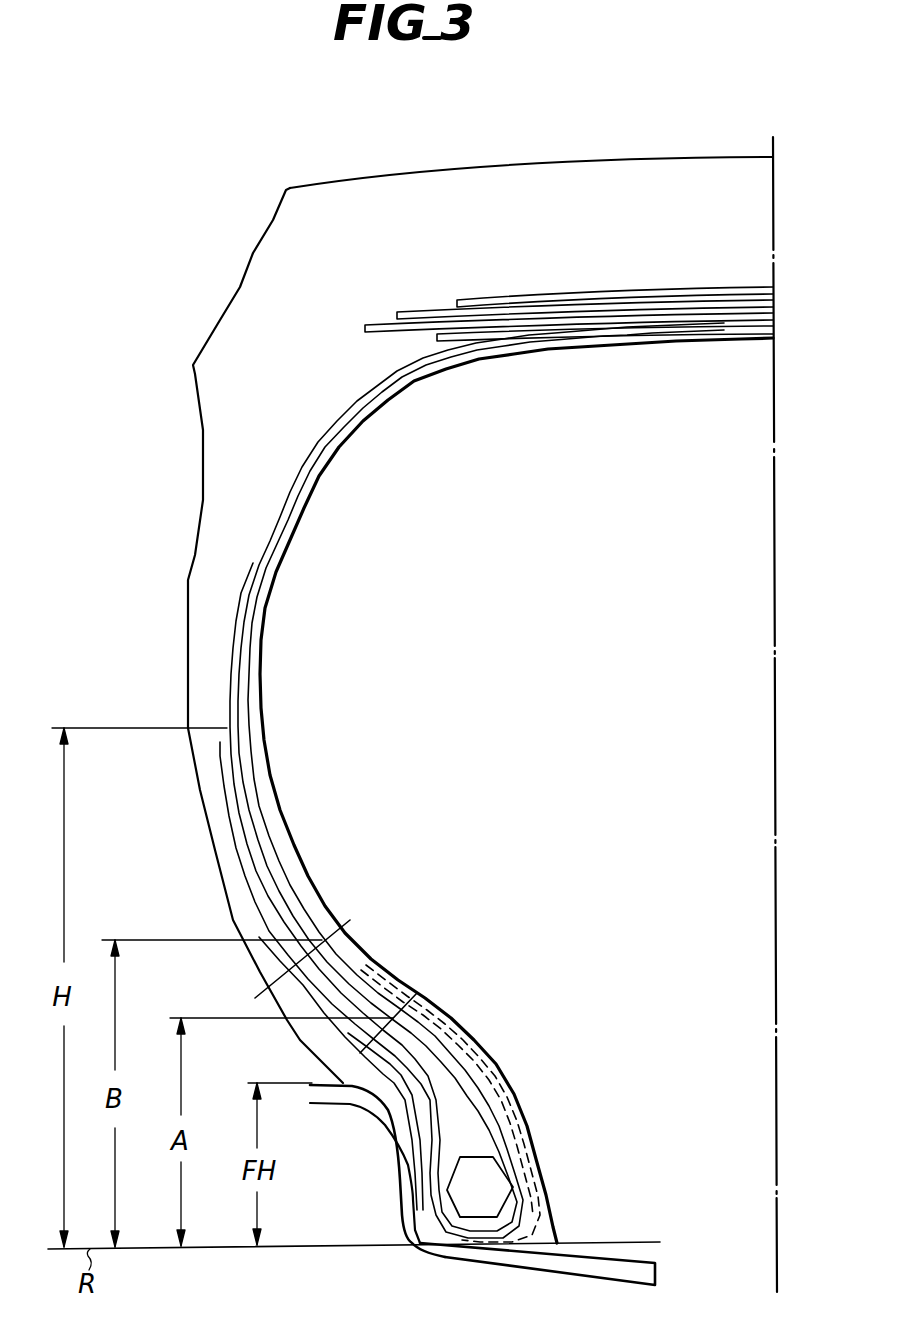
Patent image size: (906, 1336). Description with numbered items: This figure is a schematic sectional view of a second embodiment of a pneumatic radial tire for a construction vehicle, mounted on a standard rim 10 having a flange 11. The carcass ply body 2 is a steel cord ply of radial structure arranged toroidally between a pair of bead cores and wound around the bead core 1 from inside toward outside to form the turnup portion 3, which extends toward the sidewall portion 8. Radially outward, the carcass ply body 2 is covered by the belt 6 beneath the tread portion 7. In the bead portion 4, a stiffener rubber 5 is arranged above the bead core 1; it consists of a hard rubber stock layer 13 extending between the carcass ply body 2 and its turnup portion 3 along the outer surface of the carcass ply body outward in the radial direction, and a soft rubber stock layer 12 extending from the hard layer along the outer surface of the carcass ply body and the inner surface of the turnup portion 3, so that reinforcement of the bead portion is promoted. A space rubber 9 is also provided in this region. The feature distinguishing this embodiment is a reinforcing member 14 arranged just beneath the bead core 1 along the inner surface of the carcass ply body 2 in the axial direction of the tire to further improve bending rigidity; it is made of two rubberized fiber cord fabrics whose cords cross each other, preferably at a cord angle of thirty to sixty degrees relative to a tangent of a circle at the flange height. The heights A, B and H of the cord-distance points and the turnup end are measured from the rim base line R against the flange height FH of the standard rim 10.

The bead core 1 is at (488, 1187).
The carcass ply body 2 is at (360, 418).
The turnup portion 3 is at (243, 830).
The bead portion 4 is at (317, 1043).
The stiffener rubber 5 is at (472, 780).
The belt 6 is at (502, 296).
The tread portion 7 is at (603, 188).
The sidewall portion 8 is at (235, 767).
The space rubber 9 is at (393, 1073).
The standard rim 10 is at (598, 1272).
The flange 11 is at (397, 1177).
The soft rubber stock layer 12 is at (418, 992).
The hard rubber stock layer 13 is at (277, 900).
The reinforcing member 14 is at (500, 1093).